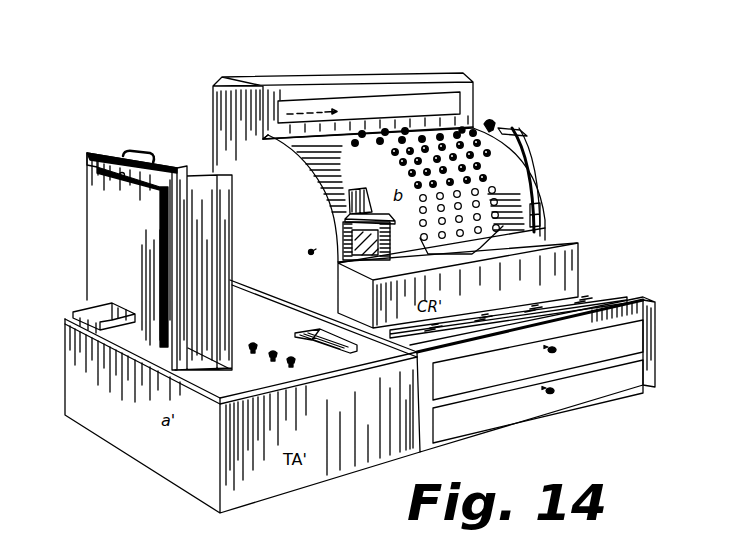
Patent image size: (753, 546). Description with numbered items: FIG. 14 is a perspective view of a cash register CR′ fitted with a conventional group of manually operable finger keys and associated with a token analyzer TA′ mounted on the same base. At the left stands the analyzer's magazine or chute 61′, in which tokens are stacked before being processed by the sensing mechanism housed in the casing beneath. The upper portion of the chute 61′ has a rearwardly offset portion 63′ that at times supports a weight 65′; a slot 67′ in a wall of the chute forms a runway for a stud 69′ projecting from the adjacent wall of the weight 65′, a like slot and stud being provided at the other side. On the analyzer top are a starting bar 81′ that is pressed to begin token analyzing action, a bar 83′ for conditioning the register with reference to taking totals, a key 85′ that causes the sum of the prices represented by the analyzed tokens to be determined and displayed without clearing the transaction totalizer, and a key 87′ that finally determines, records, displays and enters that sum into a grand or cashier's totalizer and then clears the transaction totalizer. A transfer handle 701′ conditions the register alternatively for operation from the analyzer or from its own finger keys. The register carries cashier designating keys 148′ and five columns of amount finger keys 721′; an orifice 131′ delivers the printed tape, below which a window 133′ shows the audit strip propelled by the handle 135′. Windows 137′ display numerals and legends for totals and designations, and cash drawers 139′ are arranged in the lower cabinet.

The chute 61′ is at (143, 228).
The rearwardly offset portion 63′ is at (87, 160).
The weight 65′ is at (140, 150).
The slot 67′ is at (135, 192).
The stud 69′ is at (120, 178).
The transfer handle 701′ is at (272, 139).
The windows 137′ is at (362, 108).
The cashier designating keys 148′ is at (355, 150).
The orifice 131′ is at (345, 210).
The window 133′ is at (350, 242).
The handle 135′ is at (311, 250).
The amount finger keys 721′ is at (473, 248).
The bar 83′ is at (258, 343).
The starting bar 81′ is at (305, 330).
The key 85′ is at (268, 360).
The key 87′ is at (296, 362).
The cash drawers 139′ is at (538, 381).